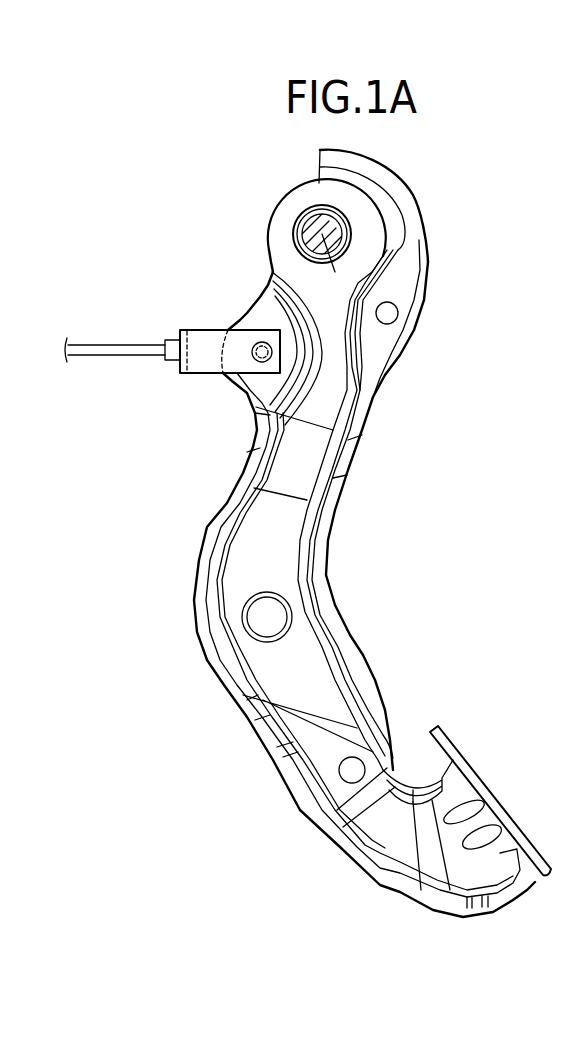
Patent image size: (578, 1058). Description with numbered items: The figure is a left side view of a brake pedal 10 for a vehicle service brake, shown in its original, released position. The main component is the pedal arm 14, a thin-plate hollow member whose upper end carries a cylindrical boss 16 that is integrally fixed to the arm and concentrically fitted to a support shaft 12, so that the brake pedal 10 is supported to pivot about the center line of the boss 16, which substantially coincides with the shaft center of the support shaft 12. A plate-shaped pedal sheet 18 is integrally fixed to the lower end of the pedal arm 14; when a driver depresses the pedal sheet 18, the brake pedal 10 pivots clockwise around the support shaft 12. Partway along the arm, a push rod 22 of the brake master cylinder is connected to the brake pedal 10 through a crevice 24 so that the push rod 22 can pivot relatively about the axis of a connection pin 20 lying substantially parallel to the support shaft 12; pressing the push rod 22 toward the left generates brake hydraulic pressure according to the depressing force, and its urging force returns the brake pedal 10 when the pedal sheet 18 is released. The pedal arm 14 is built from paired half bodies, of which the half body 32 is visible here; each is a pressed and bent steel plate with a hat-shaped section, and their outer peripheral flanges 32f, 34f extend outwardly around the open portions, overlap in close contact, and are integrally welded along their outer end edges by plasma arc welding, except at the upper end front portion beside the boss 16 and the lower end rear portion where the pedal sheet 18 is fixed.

The brake pedal 10 is at (241, 188).
The support shaft 12 is at (340, 239).
The pedal arm 14 is at (195, 733).
The boss 16 is at (350, 200).
The pedal sheet 18 is at (484, 776).
The connection pin 20 is at (257, 343).
The push rod 22 is at (98, 350).
The crevice 24 is at (202, 330).
The half body 32 is at (282, 548).
The outer peripheral flange 32f is at (311, 578).
The outer peripheral flange 34f is at (362, 418).